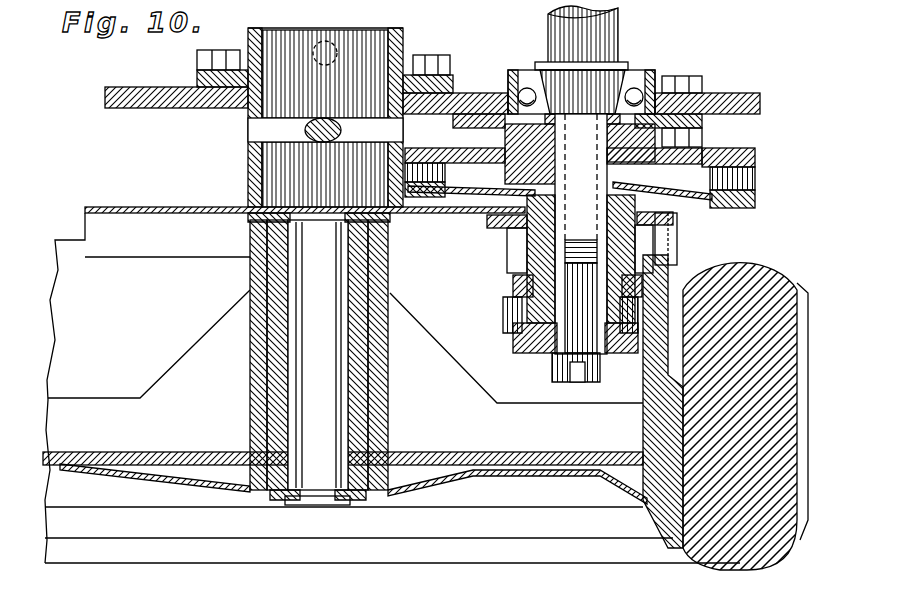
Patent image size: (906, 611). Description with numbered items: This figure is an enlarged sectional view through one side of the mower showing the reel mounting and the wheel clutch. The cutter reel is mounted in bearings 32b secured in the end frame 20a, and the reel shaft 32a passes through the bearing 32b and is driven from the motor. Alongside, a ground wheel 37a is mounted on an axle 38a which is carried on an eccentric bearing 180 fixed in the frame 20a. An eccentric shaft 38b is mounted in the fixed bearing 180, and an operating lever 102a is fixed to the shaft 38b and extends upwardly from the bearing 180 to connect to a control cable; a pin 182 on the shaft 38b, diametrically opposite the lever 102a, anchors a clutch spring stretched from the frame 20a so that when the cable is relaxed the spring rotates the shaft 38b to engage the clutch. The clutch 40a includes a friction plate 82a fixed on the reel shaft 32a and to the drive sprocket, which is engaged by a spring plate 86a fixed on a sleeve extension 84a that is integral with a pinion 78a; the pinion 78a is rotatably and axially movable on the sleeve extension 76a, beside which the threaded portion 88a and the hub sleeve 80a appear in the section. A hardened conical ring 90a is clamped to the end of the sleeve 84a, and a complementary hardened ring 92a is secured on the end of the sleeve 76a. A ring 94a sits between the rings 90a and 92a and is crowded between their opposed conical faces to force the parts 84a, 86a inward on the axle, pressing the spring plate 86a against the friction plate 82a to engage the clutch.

The end frame 20a is at (137, 100).
The eccentric bearing 180 is at (252, 124).
The pin 182 is at (318, 64).
The operating lever 102a is at (322, 142).
The eccentric shaft 38b is at (295, 194).
The axle 38a is at (300, 383).
The clutch 40a is at (504, 379).
The reel shaft 32a is at (570, 28).
The bearing 32b is at (636, 90).
The sleeve extension 76a is at (597, 178).
The friction plate 82a is at (724, 156).
The threaded portion 88a is at (752, 179).
The spring plate 86a is at (714, 202).
The pinion 78a is at (512, 240).
The sleeve extension 84a is at (665, 239).
The hardened conical ring 90a is at (515, 282).
The ring 94a is at (503, 312).
The complementary hardened ring 92a is at (525, 341).
The hub sleeve 80a is at (648, 300).
The ground wheel 37a is at (763, 535).